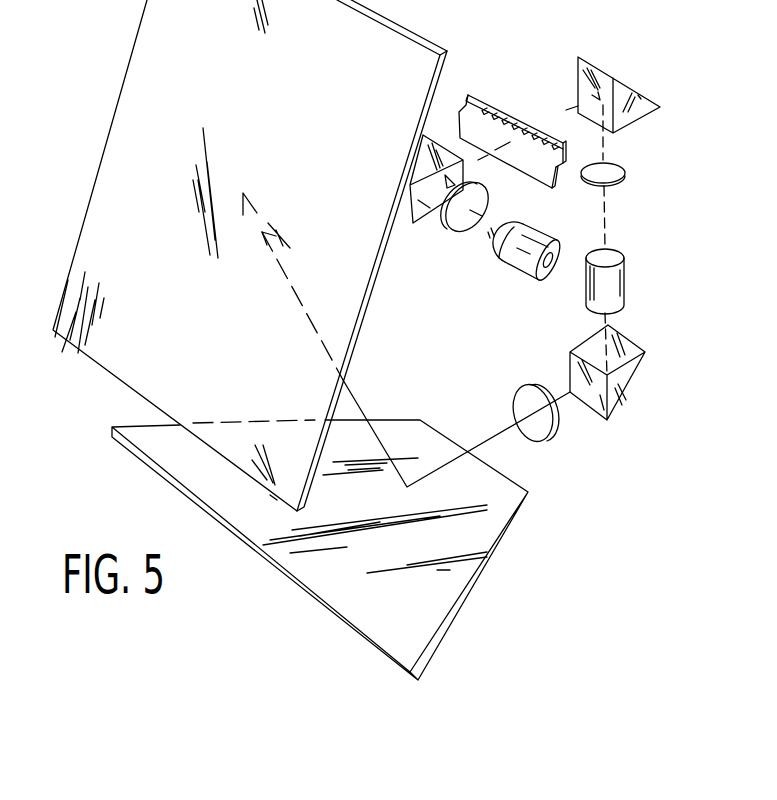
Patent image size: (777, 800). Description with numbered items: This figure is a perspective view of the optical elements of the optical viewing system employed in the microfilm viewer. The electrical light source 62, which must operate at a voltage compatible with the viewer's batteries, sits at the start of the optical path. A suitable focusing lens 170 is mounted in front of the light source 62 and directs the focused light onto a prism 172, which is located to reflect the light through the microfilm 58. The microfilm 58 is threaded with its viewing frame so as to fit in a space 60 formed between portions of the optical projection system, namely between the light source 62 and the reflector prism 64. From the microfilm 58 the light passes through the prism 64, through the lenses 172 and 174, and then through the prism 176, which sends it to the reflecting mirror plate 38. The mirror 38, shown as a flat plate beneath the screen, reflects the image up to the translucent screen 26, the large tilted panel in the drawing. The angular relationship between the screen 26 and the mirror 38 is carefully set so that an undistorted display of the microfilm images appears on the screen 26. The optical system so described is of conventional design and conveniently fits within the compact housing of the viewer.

The screen 26 is at (133, 92).
The mirror 38 is at (463, 578).
The microfilm 58 is at (485, 102).
The space 60 is at (552, 119).
The light source 62 is at (520, 277).
The reflector prism 64 is at (642, 112).
The focusing lens 170 is at (460, 230).
The prism 172 is at (422, 226).
The lens 174 is at (627, 278).
The prism 176 is at (627, 375).